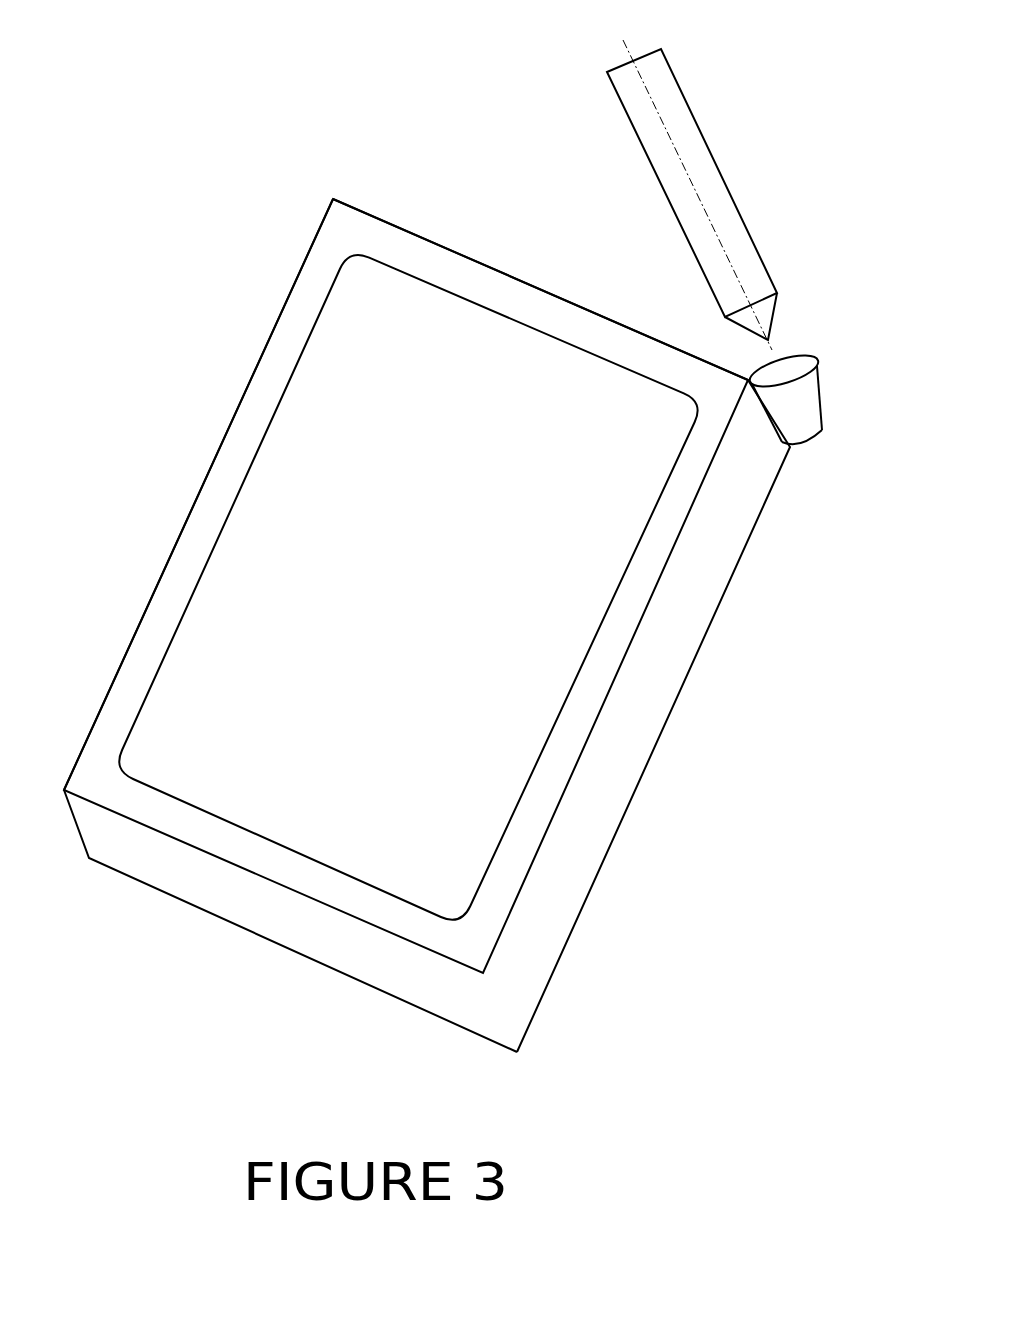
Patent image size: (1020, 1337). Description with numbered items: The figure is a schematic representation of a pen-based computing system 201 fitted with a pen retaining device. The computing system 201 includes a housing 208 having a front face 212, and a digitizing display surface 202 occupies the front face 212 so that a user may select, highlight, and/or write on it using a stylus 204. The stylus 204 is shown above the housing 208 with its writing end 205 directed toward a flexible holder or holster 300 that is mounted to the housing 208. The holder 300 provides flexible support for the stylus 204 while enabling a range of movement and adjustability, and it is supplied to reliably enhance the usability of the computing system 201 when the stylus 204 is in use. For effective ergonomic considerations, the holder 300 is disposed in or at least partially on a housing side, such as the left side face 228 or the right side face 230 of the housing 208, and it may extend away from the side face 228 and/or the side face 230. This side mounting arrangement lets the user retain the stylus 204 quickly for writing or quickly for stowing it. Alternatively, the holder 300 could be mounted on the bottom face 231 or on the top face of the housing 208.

The pen-based computing system 201 is at (416, 624).
The digitizing display surface 202 is at (452, 318).
The stylus 204 is at (731, 186).
The writing end 205 is at (770, 315).
The housing 208 is at (613, 342).
The front face 212 is at (118, 723).
The left side face 228 is at (248, 386).
The right side face 230 is at (642, 715).
The bottom face 231 is at (258, 913).
The holder 300 is at (815, 389).